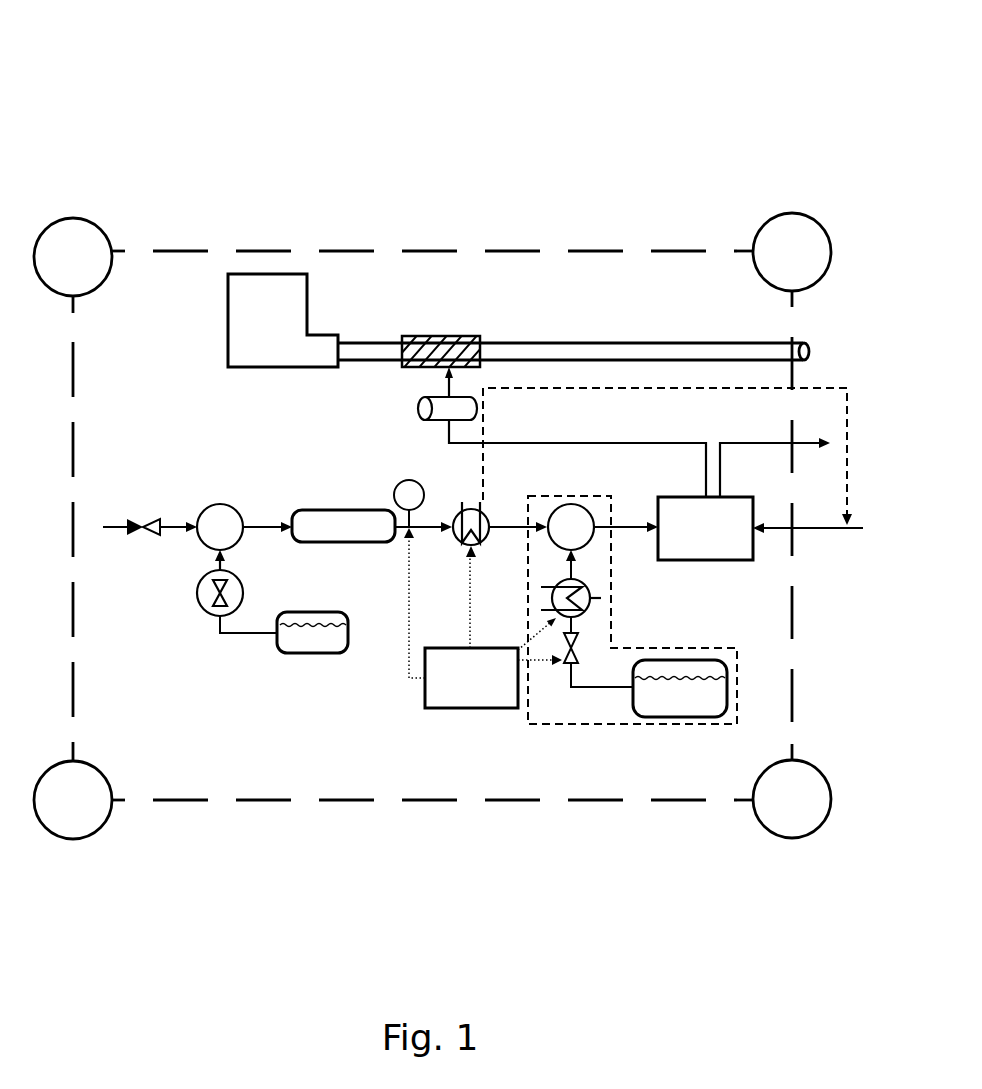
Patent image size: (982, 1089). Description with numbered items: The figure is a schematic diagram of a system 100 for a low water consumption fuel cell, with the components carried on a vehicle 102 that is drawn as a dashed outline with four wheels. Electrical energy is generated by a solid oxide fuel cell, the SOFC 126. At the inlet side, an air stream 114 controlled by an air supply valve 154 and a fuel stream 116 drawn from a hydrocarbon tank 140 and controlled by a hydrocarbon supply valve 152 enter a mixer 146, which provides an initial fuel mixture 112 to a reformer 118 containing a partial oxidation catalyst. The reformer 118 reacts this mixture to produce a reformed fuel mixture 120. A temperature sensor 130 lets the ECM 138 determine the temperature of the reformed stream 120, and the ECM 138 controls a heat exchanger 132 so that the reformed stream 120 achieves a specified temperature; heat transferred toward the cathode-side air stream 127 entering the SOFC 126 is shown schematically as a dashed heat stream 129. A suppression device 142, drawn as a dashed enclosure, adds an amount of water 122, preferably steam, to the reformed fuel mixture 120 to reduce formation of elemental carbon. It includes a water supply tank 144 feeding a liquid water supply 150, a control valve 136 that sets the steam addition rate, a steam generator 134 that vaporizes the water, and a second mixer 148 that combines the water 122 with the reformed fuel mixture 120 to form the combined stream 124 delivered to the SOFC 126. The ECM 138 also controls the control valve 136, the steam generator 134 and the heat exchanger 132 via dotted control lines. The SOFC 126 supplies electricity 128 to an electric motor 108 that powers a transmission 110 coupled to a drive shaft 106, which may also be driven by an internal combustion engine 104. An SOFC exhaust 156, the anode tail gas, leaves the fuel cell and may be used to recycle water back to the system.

The system 100 is at (125, 51).
The vehicle 102 is at (352, 803).
The internal combustion engine 104 is at (228, 319).
The drive shaft 106 is at (612, 343).
The electric motor 108 is at (418, 406).
The transmission 110 is at (457, 336).
The initial fuel mixture 112 is at (265, 521).
The air stream 114 is at (177, 521).
The fuel stream 116 is at (243, 633).
The reformer 118 is at (346, 510).
The reformed fuel mixture 120 is at (430, 530).
The amount of water 122 is at (576, 565).
The combined stream 124 is at (631, 525).
The solid oxide fuel cell 126 is at (742, 497).
The cathode-side air stream 127 is at (817, 530).
The electricity 128 is at (604, 443).
The heat stream 129 is at (843, 388).
The temperature sensor 130 is at (409, 480).
The heat exchanger 132 is at (480, 510).
The steam generator 134 is at (591, 591).
The control valve 136 is at (584, 638).
The ECM 138 is at (469, 708).
The hydrocarbon fuel tank 140 is at (315, 653).
The suppression device 142 is at (629, 730).
The water supply tank 144 is at (703, 660).
The mixer 146 is at (228, 504).
The second mixer 148 is at (574, 503).
The liquid water supply 150 is at (590, 690).
The hydrocarbon supply valve 152 is at (196, 591).
The air supply valve 154 is at (136, 518).
The SOFC exhaust 156 is at (769, 443).